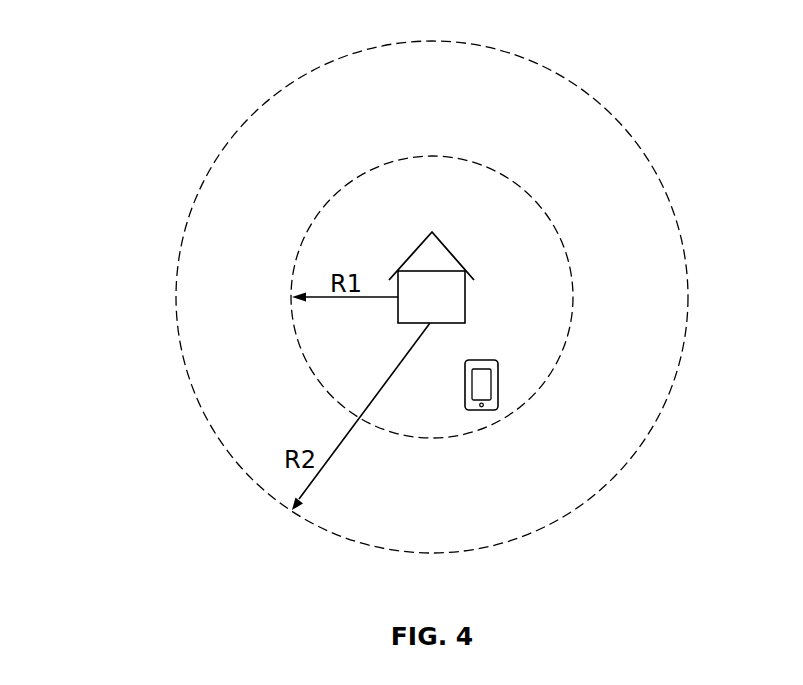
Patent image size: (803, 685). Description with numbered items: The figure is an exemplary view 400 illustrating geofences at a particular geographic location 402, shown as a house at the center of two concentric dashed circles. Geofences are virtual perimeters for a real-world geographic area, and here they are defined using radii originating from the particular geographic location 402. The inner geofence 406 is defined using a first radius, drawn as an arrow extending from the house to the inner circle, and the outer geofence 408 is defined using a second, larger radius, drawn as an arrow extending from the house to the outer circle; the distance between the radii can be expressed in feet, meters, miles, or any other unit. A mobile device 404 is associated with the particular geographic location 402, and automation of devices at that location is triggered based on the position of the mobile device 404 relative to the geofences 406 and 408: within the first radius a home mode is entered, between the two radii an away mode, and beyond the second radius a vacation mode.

The exemplary view 400 is at (161, 50).
The particular geographic location 402 is at (457, 254).
The mobile device 404 is at (480, 360).
The geofence 406 is at (497, 172).
The geofence 408 is at (573, 85).